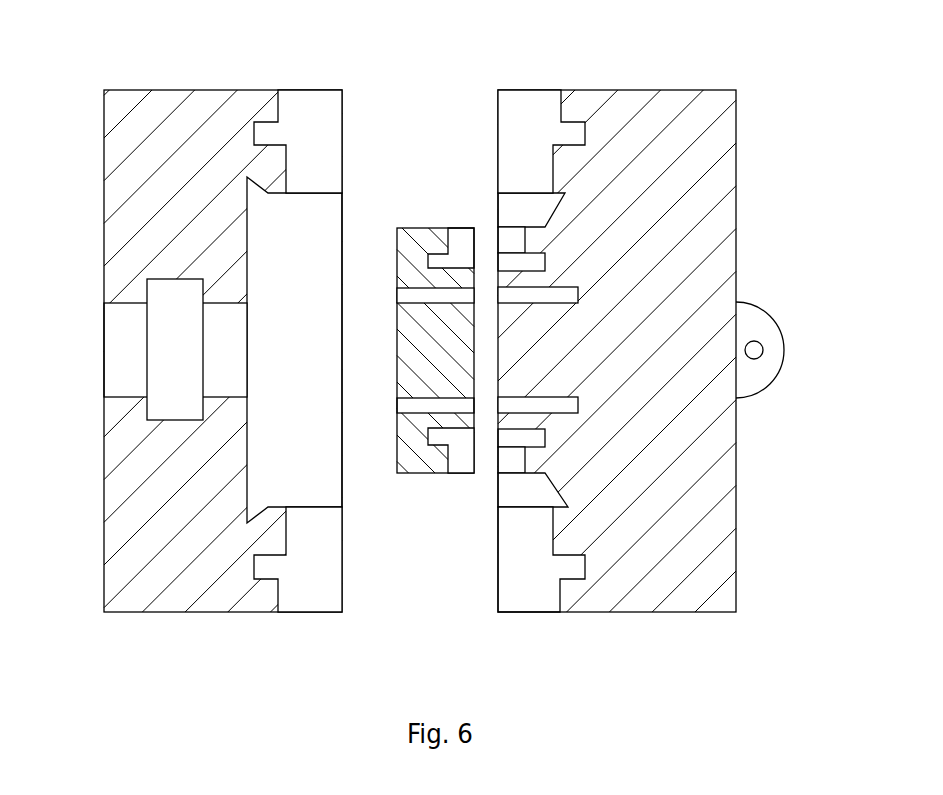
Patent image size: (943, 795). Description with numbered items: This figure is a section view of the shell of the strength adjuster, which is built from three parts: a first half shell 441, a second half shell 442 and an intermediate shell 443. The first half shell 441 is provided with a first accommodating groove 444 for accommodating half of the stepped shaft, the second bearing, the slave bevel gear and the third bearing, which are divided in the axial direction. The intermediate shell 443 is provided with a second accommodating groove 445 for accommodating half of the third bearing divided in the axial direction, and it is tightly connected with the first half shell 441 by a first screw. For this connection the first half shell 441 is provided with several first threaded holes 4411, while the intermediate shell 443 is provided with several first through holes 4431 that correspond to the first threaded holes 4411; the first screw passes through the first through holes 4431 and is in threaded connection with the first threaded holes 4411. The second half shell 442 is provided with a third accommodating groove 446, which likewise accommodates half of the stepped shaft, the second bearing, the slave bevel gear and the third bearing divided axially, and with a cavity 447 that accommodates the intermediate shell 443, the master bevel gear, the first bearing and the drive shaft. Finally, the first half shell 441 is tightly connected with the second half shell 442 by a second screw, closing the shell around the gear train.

The first half shell 441 is at (712, 155).
The first threaded holes 4411 is at (555, 297).
The second half shell 442 is at (163, 137).
The intermediate shell 443 is at (424, 236).
The first through holes 4431 is at (450, 295).
The first accommodating groove 444 is at (517, 148).
The second accommodating groove 445 is at (461, 453).
The third accommodating groove 446 is at (304, 112).
The cavity 447 is at (268, 352).